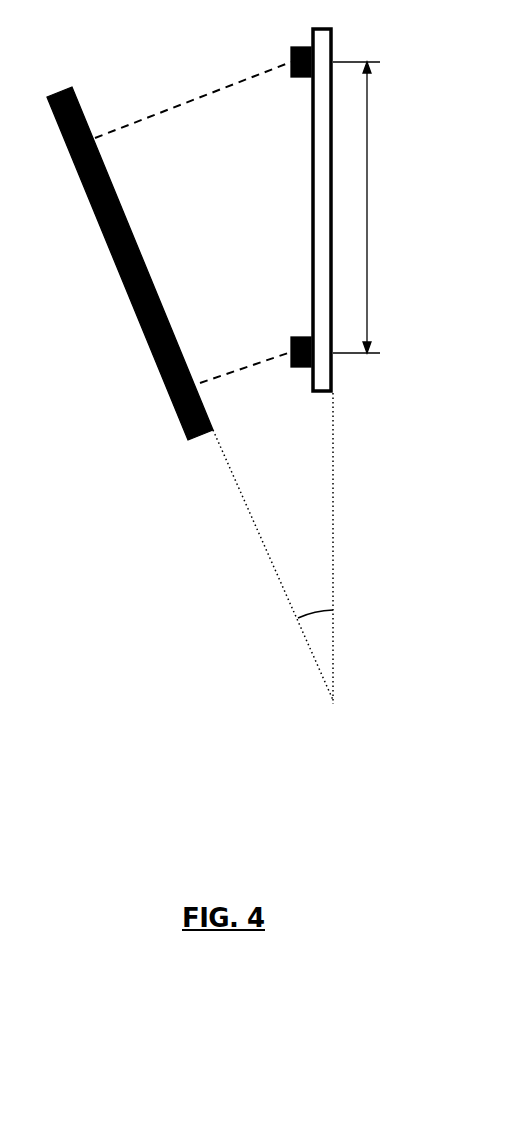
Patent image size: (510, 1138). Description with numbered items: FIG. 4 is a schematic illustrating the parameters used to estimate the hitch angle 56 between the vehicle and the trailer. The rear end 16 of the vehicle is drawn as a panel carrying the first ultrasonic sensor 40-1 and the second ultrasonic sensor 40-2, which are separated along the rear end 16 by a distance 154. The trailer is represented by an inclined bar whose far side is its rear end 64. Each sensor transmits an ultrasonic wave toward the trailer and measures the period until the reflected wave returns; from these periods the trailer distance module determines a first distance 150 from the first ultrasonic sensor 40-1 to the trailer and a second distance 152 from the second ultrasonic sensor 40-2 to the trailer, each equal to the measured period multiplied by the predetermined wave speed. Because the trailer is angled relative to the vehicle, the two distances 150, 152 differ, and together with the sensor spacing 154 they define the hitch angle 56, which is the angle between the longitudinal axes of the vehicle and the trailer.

The rear end 64 is at (130, 227).
The rear end 16 is at (310, 183).
The second ultrasonic sensor 40-2 is at (290, 76).
The first ultrasonic sensor 40-1 is at (293, 337).
The first distance 150 is at (183, 102).
The second distance 152 is at (253, 361).
The distance between the first and second ultrasonic sensors 154 is at (383, 208).
The hitch angle 56 is at (313, 608).